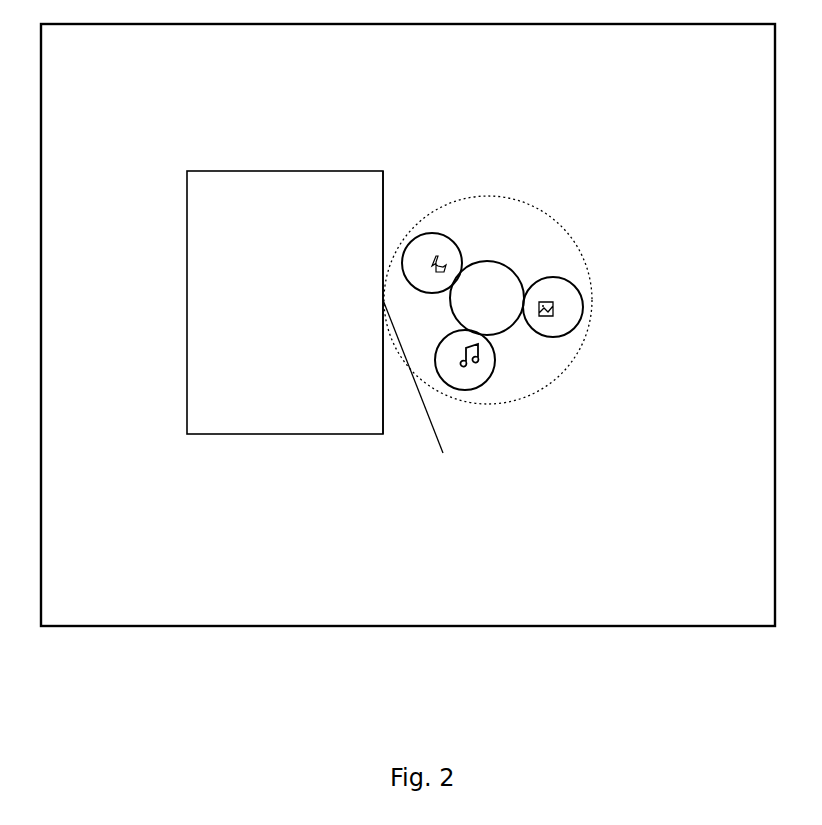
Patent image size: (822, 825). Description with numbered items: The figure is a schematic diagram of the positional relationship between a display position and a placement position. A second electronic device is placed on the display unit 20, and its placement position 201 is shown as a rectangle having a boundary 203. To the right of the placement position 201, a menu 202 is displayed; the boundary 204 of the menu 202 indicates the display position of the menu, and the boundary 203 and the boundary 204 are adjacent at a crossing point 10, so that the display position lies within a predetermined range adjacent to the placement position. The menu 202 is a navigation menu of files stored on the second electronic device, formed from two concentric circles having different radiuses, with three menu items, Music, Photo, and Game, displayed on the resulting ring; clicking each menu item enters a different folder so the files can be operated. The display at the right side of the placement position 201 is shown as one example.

The display unit 20 is at (407, 626).
The placement position 201 is at (284, 171).
The boundary 203 is at (383, 198).
The menu 202 is at (552, 225).
The boundary 204 is at (552, 382).
The crossing point 10 is at (430, 384).